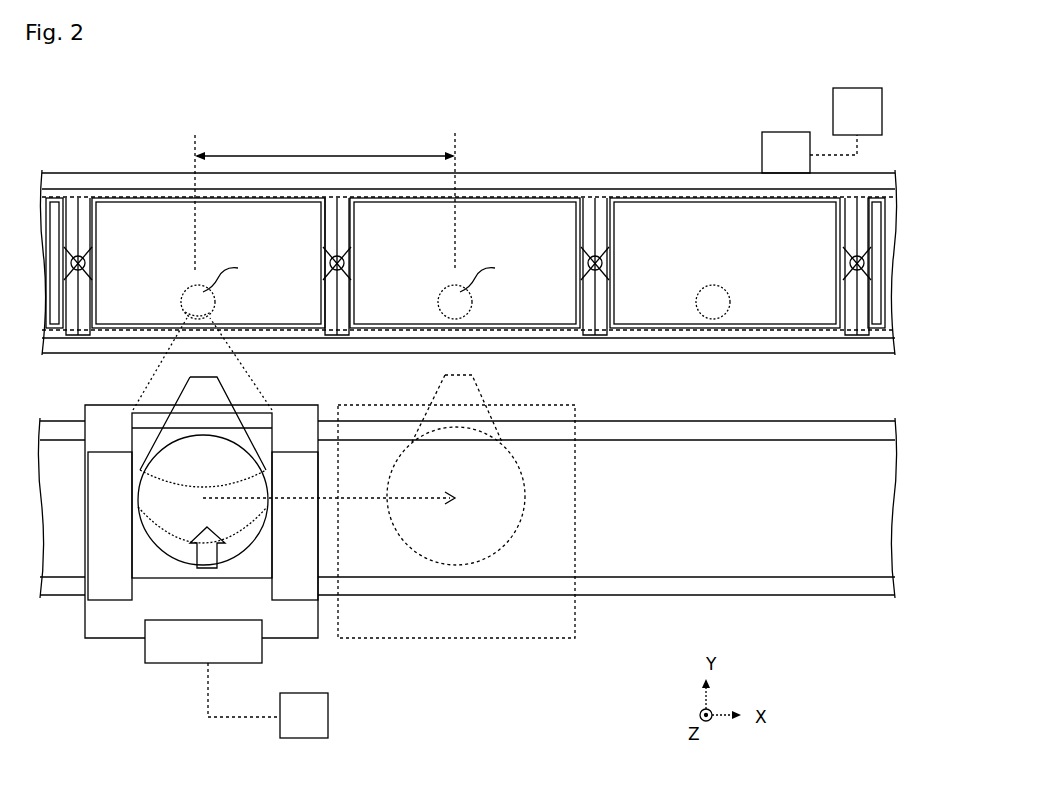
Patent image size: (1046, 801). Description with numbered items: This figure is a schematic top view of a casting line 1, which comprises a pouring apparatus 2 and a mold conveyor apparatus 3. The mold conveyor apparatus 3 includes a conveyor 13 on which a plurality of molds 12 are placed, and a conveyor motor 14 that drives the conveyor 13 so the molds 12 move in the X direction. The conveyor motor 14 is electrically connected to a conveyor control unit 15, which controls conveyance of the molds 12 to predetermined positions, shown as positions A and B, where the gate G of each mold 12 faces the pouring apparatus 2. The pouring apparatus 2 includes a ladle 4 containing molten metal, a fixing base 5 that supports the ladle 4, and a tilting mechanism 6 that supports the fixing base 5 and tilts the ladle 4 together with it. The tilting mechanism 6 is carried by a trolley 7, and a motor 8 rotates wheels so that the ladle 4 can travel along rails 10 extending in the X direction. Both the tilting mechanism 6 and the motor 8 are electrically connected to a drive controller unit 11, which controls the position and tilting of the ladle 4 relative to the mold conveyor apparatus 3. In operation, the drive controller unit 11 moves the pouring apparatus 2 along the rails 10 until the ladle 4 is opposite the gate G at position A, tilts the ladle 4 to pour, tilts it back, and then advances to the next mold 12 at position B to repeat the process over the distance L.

The casting line 1 is at (864, 727).
The pouring apparatus 2 is at (90, 694).
The mold conveyor apparatus 3 is at (128, 116).
The ladle 4 is at (183, 553).
The fixing base 5 is at (238, 572).
The tilting mechanism 6 is at (297, 572).
The trolley 7 is at (303, 617).
The motor 8 is at (183, 651).
The rails 10 is at (440, 588).
The drive controller unit 11 is at (320, 703).
The mold 12 is at (137, 212).
The conveyor 13 is at (85, 215).
The conveyor motor 14 is at (782, 140).
The conveyor control unit 15 is at (843, 103).